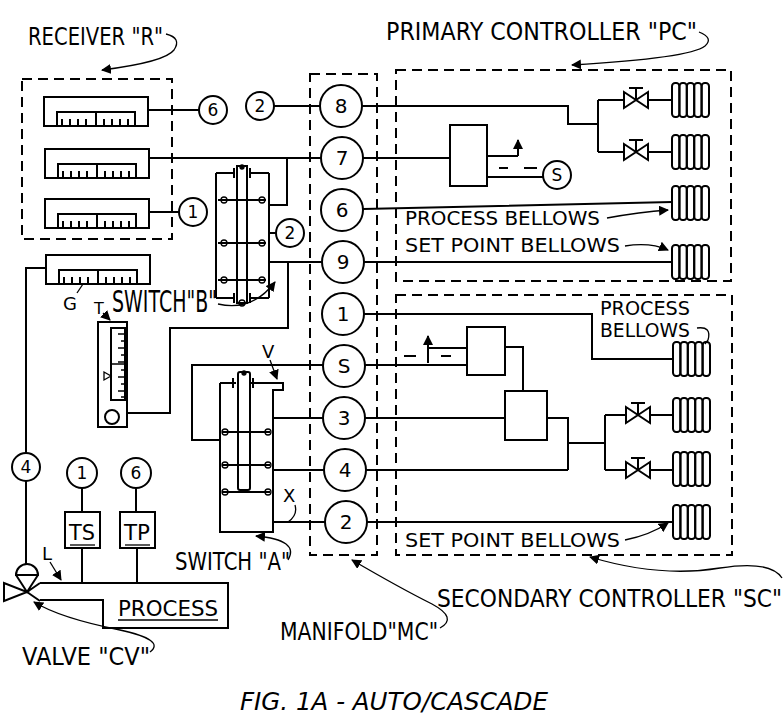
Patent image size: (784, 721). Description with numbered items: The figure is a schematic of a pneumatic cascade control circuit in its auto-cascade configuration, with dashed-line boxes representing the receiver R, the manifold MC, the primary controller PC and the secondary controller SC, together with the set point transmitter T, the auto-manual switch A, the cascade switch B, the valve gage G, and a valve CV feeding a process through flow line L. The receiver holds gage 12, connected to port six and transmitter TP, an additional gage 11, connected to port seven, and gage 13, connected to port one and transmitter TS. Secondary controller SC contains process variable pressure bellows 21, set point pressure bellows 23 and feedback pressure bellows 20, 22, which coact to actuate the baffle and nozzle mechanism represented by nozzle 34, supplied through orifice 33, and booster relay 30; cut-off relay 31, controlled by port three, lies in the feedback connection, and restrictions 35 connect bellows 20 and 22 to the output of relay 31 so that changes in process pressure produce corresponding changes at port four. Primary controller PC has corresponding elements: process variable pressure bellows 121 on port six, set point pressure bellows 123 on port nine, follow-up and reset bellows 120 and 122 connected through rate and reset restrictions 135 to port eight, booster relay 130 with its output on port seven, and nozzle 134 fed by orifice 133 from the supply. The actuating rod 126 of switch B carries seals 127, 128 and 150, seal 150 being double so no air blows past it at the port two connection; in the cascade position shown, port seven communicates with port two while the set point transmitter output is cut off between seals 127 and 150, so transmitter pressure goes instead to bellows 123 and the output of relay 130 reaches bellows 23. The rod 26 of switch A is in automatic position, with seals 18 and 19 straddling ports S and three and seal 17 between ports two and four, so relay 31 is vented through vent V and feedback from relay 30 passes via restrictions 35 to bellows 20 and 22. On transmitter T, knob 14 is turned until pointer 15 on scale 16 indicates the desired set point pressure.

The gage 12 is at (145, 97).
The gage 11 is at (148, 153).
The gage 13 is at (22, 236).
The actuating rod 126 is at (243, 166).
The seal 128 is at (232, 193).
The seal 150 is at (229, 236).
The seal 127 is at (229, 262).
The booster relay 130 is at (483, 167).
The nozzle 134 is at (516, 141).
The orifice 133 is at (533, 167).
The rate and reset restrictions 135 is at (624, 96).
The follow-up and reset bellows 122 is at (709, 100).
The follow-up and reset bellows 120 is at (709, 152).
The process variable pressure bellows 121 is at (709, 202).
The set point pressure bellows 123 is at (709, 262).
The scale 16 is at (127, 349).
The pointer 15 is at (104, 377).
The knob 14 is at (104, 418).
The rod 26 is at (243, 371).
The seal 19 is at (235, 416).
The seal 18 is at (232, 452).
The seal 17 is at (232, 482).
The nozzle 34 is at (424, 345).
The orifice 33 is at (414, 357).
The booster relay 30 is at (474, 361).
The cut-off relay 31 is at (514, 425).
The restrictions 35 is at (632, 405).
The process variable pressure bellows 21 is at (710, 359).
The feedback pressure bellows 20 is at (710, 415).
The feedback pressure bellows 22 is at (710, 470).
The set point pressure bellows 23 is at (710, 522).